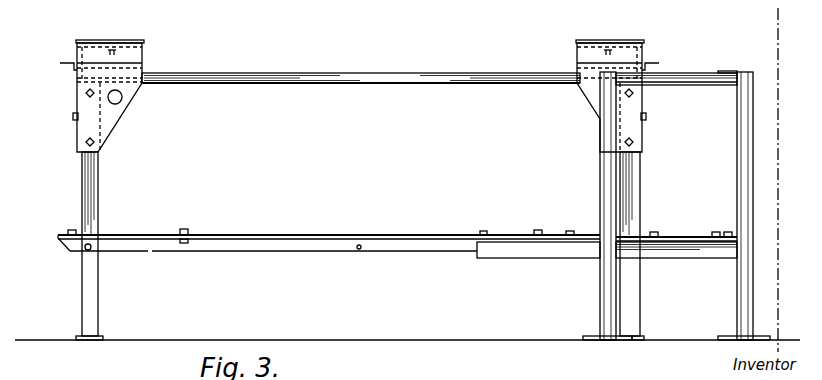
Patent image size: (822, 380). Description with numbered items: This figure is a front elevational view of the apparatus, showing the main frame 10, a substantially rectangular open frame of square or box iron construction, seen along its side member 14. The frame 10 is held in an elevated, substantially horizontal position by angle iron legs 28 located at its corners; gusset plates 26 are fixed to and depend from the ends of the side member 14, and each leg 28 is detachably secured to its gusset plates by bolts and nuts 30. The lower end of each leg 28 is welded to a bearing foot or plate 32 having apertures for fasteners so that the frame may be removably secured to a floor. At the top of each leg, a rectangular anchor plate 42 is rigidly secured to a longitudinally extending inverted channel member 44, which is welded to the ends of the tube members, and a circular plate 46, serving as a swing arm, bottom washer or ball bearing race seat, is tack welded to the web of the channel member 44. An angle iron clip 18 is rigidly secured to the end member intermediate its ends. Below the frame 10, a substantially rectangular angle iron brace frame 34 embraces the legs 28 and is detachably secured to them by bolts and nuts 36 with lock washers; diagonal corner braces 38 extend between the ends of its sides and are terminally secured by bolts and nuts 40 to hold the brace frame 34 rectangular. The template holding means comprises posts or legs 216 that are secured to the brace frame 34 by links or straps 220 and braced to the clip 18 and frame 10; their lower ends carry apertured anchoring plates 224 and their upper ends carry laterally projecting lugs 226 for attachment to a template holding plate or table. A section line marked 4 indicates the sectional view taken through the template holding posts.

The frame 10 is at (306, 88).
The side member 14 is at (390, 77).
The angle iron clip 18 is at (70, 66).
The gusset plate 26 is at (114, 116).
The angle iron leg 28 is at (96, 195).
The bolts and nuts 30 is at (86, 93).
The bearing foot 32 is at (101, 337).
The brace frame 34 is at (310, 250).
The bolts and nuts 36 is at (86, 249).
The diagonal corner brace 38 is at (122, 236).
The bolts and nuts 40 is at (70, 230).
The anchor plate 42 is at (100, 40).
The channel member 44 is at (138, 57).
The circular plate 46 is at (108, 55).
The post 216 is at (600, 284).
The strap 220 is at (532, 258).
The anchoring plate 224 is at (590, 338).
The lug 226 is at (727, 83).
The section line 4- 4 is at (778, 10).